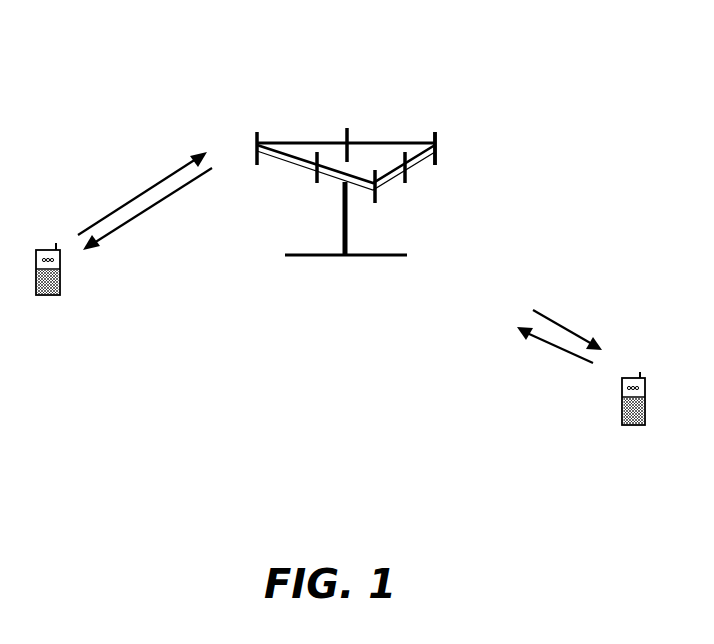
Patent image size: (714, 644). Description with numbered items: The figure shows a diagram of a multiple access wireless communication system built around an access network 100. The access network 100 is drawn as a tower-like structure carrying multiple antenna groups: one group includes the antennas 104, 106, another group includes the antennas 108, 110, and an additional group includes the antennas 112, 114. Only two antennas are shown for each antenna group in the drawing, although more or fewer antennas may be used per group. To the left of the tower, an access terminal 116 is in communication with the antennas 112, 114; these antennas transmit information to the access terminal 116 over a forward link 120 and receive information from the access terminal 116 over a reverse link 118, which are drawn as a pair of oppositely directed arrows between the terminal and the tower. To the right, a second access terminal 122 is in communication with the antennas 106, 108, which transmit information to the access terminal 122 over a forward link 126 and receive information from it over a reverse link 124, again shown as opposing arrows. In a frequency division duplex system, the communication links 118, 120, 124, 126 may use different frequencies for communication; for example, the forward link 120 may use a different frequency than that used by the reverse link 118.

The access network 100 is at (328, 255).
The antenna 104 is at (375, 200).
The antenna 106 is at (405, 182).
The antenna 108 is at (438, 160).
The antenna 110 is at (347, 128).
The antenna 112 is at (262, 137).
The antenna 114 is at (317, 183).
The access terminal 116 is at (47, 250).
The reverse link 118 is at (140, 192).
The forward link 120 is at (157, 205).
The access terminal 122 is at (637, 377).
The reverse link 124 is at (543, 337).
The forward link 126 is at (571, 331).